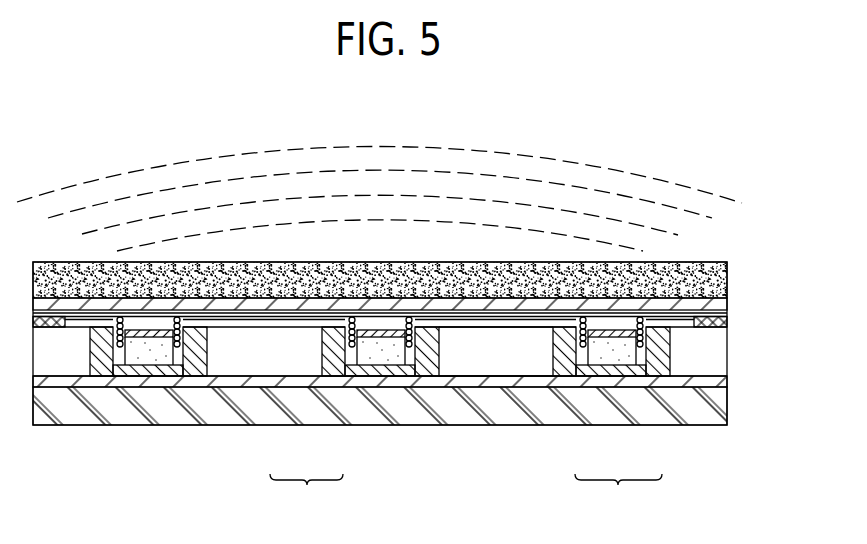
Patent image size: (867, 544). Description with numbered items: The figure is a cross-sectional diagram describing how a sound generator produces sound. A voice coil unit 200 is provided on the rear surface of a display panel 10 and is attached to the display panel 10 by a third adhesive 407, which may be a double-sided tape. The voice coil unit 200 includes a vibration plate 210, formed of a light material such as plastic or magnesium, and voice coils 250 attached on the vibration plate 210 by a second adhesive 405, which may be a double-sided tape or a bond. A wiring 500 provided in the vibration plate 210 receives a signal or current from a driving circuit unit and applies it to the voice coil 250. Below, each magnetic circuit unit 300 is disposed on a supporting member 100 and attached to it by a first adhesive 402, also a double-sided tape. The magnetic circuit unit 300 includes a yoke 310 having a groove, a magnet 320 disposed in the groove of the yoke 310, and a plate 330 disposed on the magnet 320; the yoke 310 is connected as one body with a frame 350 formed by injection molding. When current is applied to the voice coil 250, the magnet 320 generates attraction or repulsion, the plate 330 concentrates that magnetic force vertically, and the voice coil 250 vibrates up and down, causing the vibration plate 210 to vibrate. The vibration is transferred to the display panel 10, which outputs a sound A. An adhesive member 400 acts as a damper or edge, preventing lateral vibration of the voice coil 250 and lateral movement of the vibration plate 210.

The sound A is at (160, 162).
The display panel 10 is at (727, 283).
The third adhesive 407 is at (727, 304).
The vibration plate 210 is at (727, 313).
The voice coil 250 is at (350, 320).
The voice coil unit 200 is at (306, 492).
The adhesive member 400 is at (727, 327).
The second adhesive 405 is at (152, 317).
The wiring 500 is at (220, 317).
The frame 350 is at (468, 360).
The first adhesive 402 is at (518, 381).
The supporting member 100 is at (402, 408).
The magnet 320 is at (597, 357).
The plate 330 is at (617, 336).
The yoke 310 is at (655, 360).
The magnetic circuit unit 300 is at (618, 492).